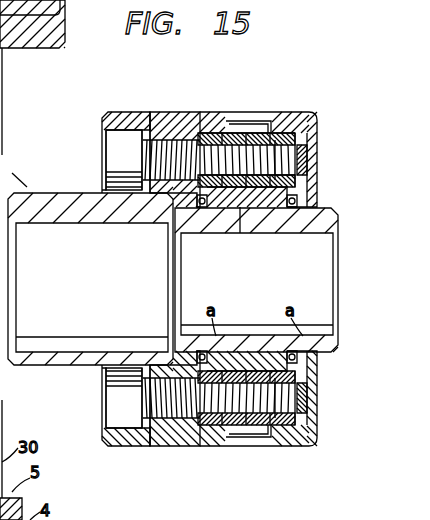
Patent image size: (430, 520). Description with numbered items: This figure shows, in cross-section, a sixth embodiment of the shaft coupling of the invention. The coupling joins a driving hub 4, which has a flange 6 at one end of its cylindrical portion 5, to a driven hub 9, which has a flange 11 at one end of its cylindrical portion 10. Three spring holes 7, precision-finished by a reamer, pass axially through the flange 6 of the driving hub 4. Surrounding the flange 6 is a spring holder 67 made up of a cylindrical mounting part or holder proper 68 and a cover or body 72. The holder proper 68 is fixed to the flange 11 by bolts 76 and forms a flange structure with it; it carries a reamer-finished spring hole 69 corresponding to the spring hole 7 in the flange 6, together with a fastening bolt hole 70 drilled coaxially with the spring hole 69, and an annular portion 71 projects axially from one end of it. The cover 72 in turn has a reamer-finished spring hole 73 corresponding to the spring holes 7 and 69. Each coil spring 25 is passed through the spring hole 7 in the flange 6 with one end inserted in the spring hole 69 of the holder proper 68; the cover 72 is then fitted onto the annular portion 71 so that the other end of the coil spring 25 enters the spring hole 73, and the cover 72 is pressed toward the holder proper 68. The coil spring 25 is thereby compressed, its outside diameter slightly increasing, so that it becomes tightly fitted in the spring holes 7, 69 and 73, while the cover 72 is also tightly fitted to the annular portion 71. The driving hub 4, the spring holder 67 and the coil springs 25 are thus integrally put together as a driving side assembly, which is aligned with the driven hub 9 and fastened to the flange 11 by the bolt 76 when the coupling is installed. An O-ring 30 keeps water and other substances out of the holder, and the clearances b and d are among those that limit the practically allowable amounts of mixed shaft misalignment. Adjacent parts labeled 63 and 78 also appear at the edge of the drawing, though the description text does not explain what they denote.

The driving hub 4 is at (334, 205).
The cylindrical portion 5 is at (318, 351).
The flange 6 is at (248, 132).
The spring hole 7 is at (245, 208).
The driven hub 9 is at (27, 187).
The cylindrical portion 10 is at (62, 198).
The flange 11 is at (102, 124).
The coil spring 25 is at (214, 132).
The O-ring 30 is at (314, 176).
The end member 63 is at (2, 84).
The holder 67 is at (180, 105).
The holder proper 68 is at (152, 118).
The spring hole 69 is at (238, 140).
The fastening bolt hole 70 is at (172, 116).
The annular portion 71 is at (290, 112).
The cover 72 is at (312, 142).
The spring hole 73 is at (310, 126).
The bolt 76 is at (108, 163).
The end member 78 is at (2, 432).
The clearance b is at (272, 112).
The clearance d is at (228, 122).